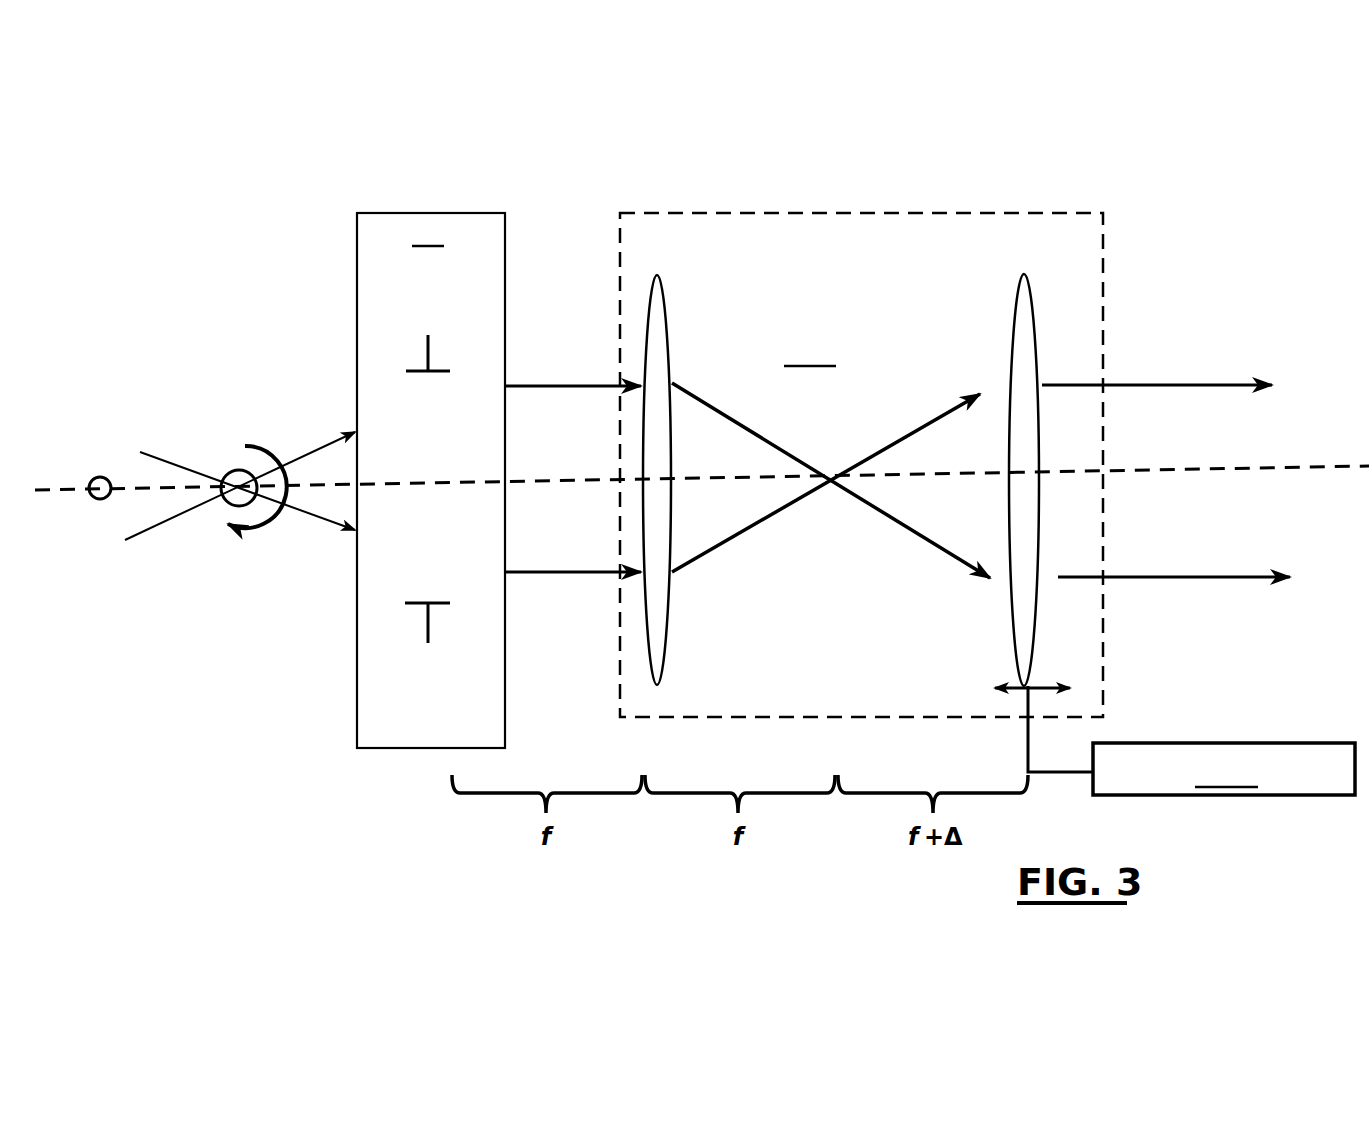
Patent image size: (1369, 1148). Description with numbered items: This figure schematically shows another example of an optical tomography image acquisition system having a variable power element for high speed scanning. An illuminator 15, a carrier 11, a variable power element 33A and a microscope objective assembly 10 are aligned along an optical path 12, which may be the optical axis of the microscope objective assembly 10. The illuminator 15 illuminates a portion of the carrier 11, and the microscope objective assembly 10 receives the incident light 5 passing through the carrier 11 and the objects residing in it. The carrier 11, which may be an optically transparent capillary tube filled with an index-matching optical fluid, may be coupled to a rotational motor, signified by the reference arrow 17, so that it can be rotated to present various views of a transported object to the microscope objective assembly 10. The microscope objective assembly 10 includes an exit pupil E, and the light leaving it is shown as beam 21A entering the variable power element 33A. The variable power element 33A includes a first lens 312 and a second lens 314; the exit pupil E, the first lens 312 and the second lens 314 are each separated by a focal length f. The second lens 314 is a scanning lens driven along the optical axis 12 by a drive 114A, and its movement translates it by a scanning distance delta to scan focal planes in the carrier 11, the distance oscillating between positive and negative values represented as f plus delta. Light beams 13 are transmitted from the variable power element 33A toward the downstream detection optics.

The illuminator 15 is at (100, 477).
The incident light 5 is at (177, 463).
The carrier 11 is at (239, 452).
The reference arrow 17 is at (250, 535).
The exit pupil E is at (420, 625).
The microscope objective assembly 10 is at (431, 480).
The collimated beam 21A is at (573, 380).
The optical path 12 is at (550, 490).
The variable power element 33A is at (861, 465).
The first lens 312 is at (668, 310).
The second lens 314 is at (1033, 297).
The light beams 13 is at (1137, 578).
The drive 114A is at (1191, 740).